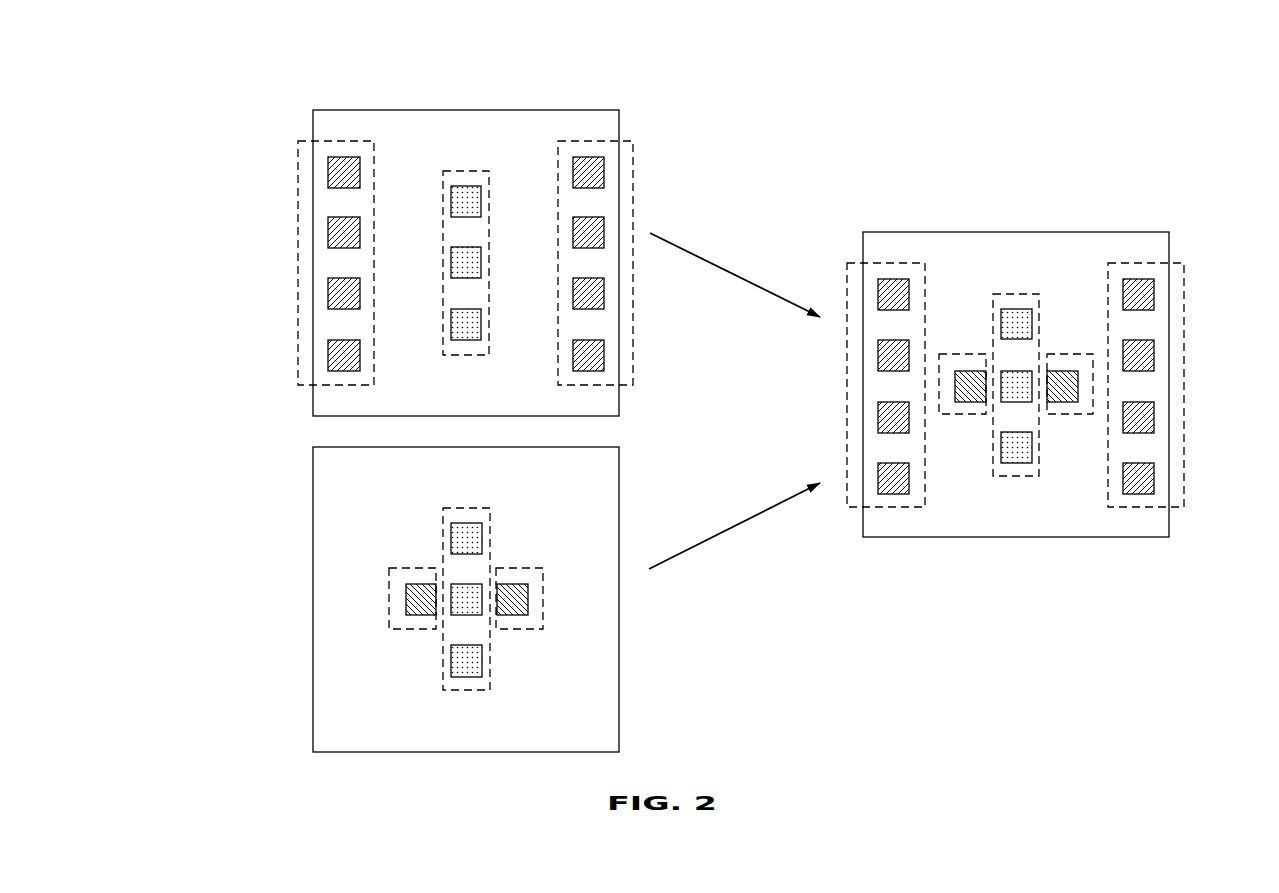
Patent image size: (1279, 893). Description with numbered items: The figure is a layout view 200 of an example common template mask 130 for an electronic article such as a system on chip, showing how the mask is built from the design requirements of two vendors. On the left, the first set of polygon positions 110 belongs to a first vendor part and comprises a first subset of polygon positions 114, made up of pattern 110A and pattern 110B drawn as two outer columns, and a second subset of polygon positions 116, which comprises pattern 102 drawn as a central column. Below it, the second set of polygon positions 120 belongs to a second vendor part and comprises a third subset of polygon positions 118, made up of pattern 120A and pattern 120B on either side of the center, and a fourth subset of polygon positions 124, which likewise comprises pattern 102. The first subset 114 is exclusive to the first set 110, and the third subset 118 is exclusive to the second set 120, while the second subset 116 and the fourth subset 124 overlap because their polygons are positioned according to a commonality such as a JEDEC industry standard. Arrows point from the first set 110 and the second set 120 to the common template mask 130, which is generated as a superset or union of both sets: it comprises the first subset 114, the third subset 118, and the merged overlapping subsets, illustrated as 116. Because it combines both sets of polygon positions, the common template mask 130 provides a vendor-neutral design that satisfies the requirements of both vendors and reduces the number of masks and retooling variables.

The layout view 200 is at (182, 70).
The first set of polygon positions 110 is at (300, 110).
The pattern 110A is at (298, 200).
The pattern 110B is at (635, 183).
The first subset of polygon positions 114 is at (549, 122).
The second subset of polygon positions 116 is at (466, 158).
The pattern 102 is at (443, 225).
The second set of polygon positions 120 is at (298, 456).
The pattern 120A is at (390, 627).
The pattern 120B is at (542, 627).
The fourth subset of polygon positions 124 is at (448, 497).
The third subset of polygon positions 118 is at (532, 558).
The common template mask 130 is at (1175, 216).